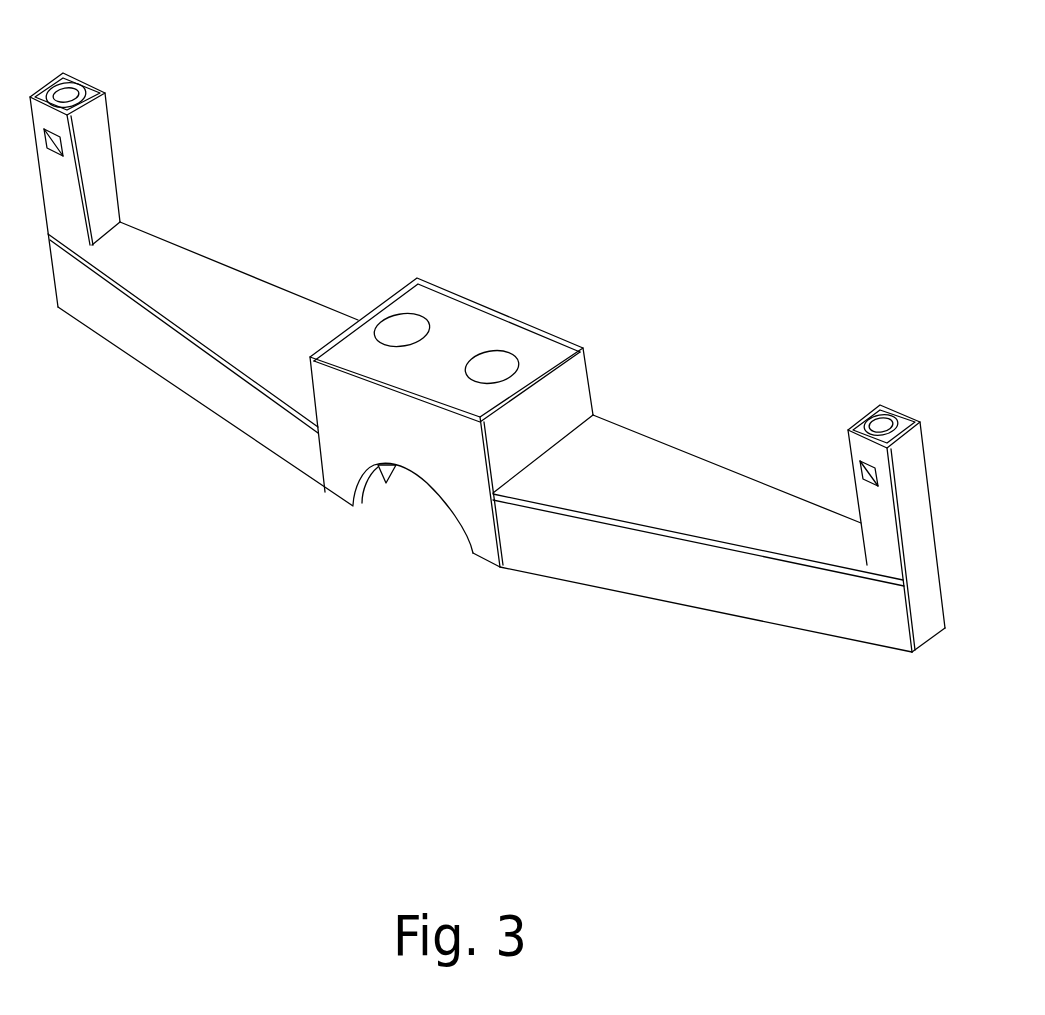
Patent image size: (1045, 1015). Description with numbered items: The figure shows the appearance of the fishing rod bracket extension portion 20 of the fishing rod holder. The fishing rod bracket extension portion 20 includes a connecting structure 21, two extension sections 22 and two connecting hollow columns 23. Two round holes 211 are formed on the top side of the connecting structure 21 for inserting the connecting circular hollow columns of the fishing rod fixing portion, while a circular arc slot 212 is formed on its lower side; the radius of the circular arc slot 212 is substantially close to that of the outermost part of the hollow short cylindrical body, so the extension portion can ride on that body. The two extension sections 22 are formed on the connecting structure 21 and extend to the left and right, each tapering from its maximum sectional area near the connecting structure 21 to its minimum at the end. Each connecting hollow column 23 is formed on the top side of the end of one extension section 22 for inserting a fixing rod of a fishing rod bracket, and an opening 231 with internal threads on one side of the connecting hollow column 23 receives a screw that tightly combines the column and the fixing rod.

The fishing rod bracket extension portion 20 is at (546, 188).
The connecting structure 21 is at (585, 387).
The round holes 211 is at (405, 330).
The circular arc slot 212 is at (427, 482).
The extension sections 22 is at (210, 270).
The connecting hollow columns 23 is at (68, 95).
The opening 231 is at (52, 148).